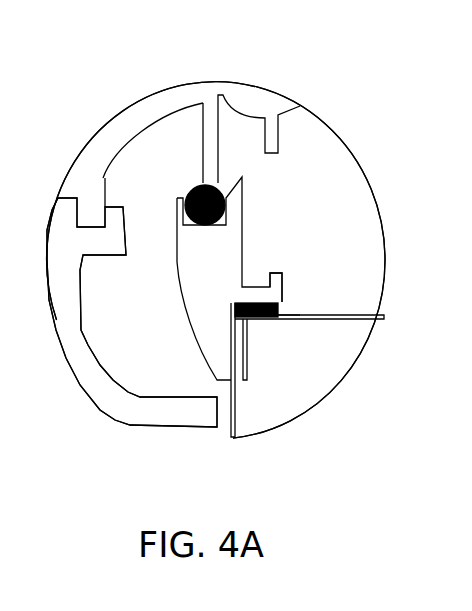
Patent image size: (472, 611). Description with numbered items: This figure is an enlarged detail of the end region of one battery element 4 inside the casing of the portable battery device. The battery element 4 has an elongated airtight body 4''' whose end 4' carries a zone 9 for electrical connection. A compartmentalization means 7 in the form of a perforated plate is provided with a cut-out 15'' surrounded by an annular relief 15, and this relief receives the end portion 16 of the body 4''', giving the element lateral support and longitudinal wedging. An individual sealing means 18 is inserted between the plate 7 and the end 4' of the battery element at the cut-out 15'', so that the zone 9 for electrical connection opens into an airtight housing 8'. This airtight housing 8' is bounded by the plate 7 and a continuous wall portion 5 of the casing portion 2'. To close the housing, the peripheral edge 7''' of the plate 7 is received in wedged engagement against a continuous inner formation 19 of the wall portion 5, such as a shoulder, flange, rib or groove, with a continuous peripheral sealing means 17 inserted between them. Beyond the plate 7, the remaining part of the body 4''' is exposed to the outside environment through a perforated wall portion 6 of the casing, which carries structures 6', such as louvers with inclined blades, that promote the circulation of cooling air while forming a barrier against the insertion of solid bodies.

The casing portion 2' is at (216, 164).
The continuous wall portion 5 is at (157, 100).
The battery element 4 is at (309, 364).
The end of the battery element 4' is at (342, 226).
The elongated airtight body 4''' is at (315, 364).
The airtight housing 8' is at (244, 132).
The continuous inner formation 19 is at (212, 135).
The continuous peripheral sealing means 17 is at (192, 183).
The compartmentalization means 7 is at (156, 216).
The peripheral edge 7''' is at (179, 375).
The individual sealing means 18 is at (261, 299).
The cut-out 15'' is at (357, 180).
The zone for electrical connection 9 is at (358, 311).
The end portion 16 is at (247, 347).
The relief 15 is at (254, 400).
The perforated wall portion 6 is at (123, 343).
The structure promoting air circulation 6' is at (132, 343).